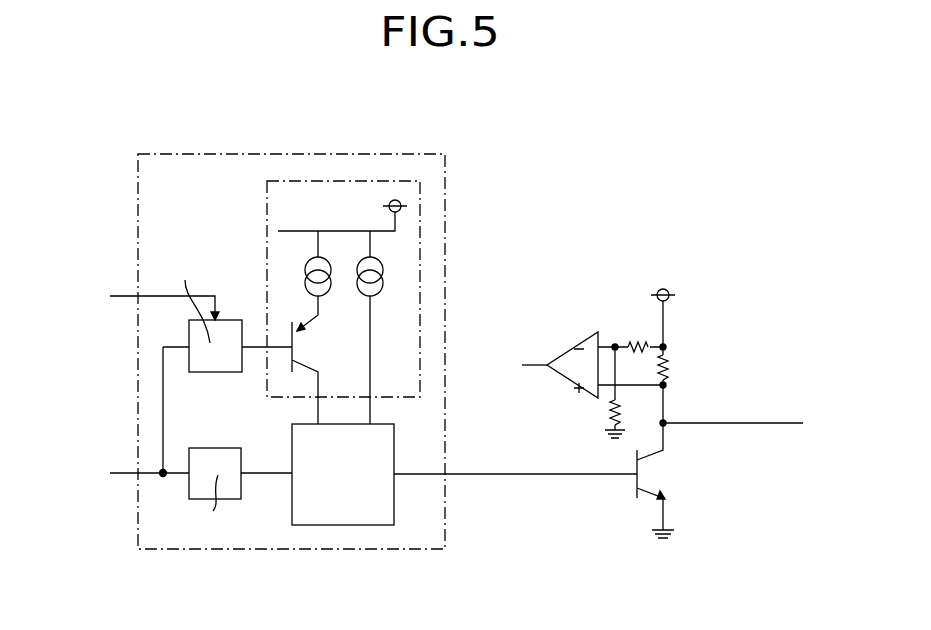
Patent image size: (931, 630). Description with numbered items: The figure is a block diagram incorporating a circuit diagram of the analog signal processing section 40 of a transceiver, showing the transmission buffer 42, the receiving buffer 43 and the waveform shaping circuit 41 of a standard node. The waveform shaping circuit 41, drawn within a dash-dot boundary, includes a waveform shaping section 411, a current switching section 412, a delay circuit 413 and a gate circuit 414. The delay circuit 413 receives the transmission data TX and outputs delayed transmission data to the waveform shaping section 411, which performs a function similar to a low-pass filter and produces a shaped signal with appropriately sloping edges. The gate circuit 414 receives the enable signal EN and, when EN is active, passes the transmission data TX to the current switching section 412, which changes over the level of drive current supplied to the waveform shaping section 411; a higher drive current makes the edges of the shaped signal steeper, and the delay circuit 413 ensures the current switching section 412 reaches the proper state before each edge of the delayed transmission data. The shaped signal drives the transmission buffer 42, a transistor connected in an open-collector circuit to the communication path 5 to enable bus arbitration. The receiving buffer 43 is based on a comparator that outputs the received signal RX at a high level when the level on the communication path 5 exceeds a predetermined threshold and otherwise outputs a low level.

The analog signal processing section 40 is at (633, 100).
The waveform shaping circuit 41 is at (446, 181).
The waveform shaping section 411 is at (394, 512).
The current switching section 412 is at (267, 208).
The delay circuit 413 is at (201, 448).
The gate circuit 414 is at (233, 320).
The transmission buffer 42 is at (677, 478).
The receiving buffer 43 is at (576, 325).
The communication path 5 is at (766, 423).